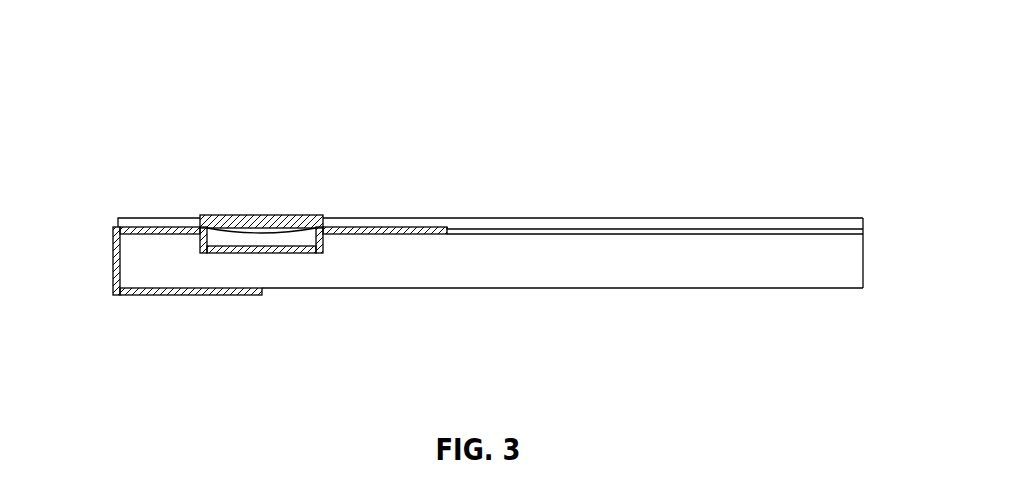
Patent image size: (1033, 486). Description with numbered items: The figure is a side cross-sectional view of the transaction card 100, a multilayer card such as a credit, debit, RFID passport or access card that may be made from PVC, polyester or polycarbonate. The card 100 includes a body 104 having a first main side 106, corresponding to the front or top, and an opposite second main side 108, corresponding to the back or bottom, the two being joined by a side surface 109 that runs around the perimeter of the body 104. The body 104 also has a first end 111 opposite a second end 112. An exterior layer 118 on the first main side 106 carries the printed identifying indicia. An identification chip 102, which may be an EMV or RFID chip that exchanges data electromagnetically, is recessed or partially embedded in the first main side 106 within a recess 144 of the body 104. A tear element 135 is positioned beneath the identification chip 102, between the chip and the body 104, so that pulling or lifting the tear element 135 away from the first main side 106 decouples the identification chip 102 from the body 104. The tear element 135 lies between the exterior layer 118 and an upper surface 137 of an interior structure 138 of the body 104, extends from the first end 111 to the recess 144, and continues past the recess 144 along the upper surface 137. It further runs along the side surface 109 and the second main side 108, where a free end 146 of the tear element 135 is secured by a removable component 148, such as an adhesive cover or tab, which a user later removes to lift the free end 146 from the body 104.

The transaction card 100 is at (136, 98).
The identification chip 102 is at (290, 216).
The body 104 is at (862, 241).
The first main side 106 is at (663, 218).
The second main side 108 is at (702, 289).
The side surface 109 is at (120, 275).
The first end 111 is at (130, 241).
The second end 112 is at (867, 272).
The exterior layer 118 is at (517, 226).
The tear element 135 is at (173, 228).
The upper surface 137 is at (780, 231).
The interior structure 138 is at (813, 280).
The recess 144 is at (311, 244).
The free end 146 is at (173, 306).
The removable component 148 is at (250, 306).